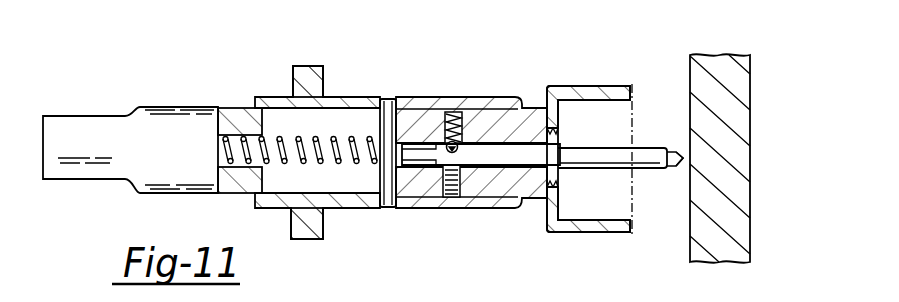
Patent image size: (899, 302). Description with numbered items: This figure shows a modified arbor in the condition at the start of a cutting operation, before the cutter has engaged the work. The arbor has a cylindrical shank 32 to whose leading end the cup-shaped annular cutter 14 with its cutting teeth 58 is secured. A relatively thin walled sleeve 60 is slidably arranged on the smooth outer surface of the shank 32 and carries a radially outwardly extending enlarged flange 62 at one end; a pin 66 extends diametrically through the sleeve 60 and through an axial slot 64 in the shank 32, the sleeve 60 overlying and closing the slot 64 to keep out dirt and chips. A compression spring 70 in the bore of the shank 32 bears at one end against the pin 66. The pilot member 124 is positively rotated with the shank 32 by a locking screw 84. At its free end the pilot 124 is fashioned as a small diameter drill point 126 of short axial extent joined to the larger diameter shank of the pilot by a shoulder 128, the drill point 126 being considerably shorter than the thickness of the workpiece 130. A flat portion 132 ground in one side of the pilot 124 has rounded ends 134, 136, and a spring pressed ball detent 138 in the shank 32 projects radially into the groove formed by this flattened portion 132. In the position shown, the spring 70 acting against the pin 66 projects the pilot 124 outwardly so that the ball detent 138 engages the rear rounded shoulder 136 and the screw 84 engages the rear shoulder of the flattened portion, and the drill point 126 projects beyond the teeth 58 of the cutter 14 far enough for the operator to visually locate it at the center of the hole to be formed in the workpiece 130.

The cup-shaped annular cutter 14 is at (597, 85).
The cylindrical shank 32 is at (178, 185).
The cutting teeth 58 is at (632, 95).
The sleeve 60 is at (345, 97).
The flange 62 is at (305, 65).
The slot 64 is at (355, 184).
The pin 66 is at (390, 97).
The compression spring 70 is at (219, 134).
The locking screw 84 is at (455, 208).
The pilot member 124 is at (620, 128).
The drill point 126 is at (684, 158).
The shoulder 128 is at (667, 172).
The workpiece 130 is at (743, 82).
The flat portion 132 is at (483, 147).
The rounded end of flattened portion 134 is at (500, 152).
The rear rounded shoulder 136 is at (450, 151).
The spring pressed ball detent 138 is at (458, 112).